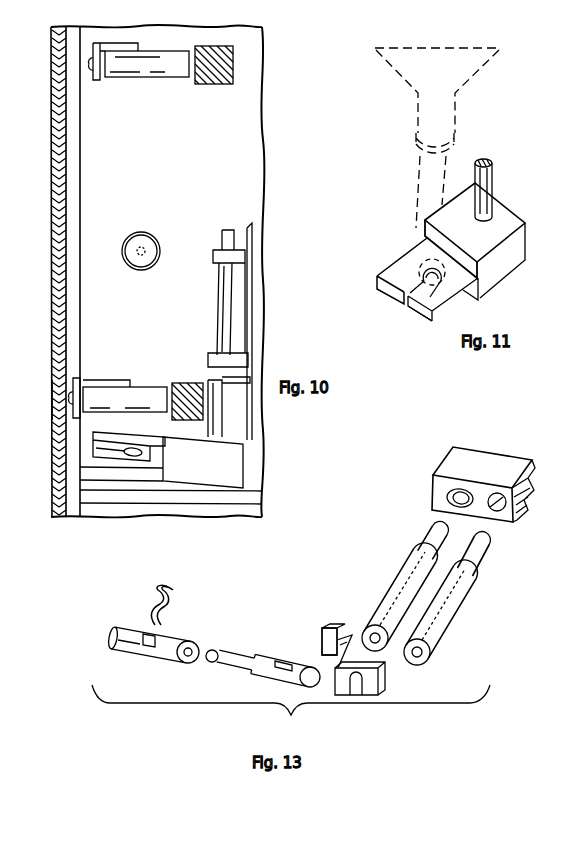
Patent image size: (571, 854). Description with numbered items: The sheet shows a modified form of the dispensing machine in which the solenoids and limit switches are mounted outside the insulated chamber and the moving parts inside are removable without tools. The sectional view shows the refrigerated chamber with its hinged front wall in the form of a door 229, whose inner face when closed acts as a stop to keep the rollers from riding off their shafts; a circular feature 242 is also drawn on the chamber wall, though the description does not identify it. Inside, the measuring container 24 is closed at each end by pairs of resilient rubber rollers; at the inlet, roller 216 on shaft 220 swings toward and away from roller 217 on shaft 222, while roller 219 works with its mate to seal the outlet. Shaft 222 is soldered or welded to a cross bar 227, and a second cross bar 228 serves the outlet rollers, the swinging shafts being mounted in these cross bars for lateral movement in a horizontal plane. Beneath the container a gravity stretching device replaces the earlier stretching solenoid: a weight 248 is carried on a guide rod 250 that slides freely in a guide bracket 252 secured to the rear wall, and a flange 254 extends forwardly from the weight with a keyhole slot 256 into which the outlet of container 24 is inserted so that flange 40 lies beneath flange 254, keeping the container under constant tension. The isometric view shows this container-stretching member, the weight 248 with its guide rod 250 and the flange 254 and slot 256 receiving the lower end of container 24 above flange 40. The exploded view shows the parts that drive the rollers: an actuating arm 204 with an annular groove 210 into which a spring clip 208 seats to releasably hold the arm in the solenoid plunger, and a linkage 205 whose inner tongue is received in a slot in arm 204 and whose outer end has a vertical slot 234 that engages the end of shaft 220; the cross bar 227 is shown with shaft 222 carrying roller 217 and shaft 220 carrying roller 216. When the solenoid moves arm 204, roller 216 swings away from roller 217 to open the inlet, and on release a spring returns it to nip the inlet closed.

In FIG. 11, the measuring container 24 is at (410, 84).
In FIG. 11, the flange 40 is at (417, 300).
In FIG. 13, the actuating arm 204 is at (265, 660).
In FIG. 13, the linkage 205 is at (345, 632).
In FIG. 13, the spring clip 208 is at (173, 601).
In FIG. 13, the annular groove 210 is at (220, 650).
In FIG. 13, the resilient rubber roller 216 is at (388, 575).
In FIG. 10, the resilient rubber roller 217 is at (150, 73).
In FIG. 13, the resilient rubber roller 217 is at (443, 612).
In FIG. 10, the resilient rubber roller 219 is at (138, 391).
In FIG. 13, the shaft 220 is at (426, 537).
In FIG. 13, the shaft 222 is at (482, 555).
In FIG. 10, the cross bar 227 is at (223, 79).
In FIG. 13, the cross bar 227 is at (493, 458).
In FIG. 10, the cross bar 228 is at (185, 384).
In FIG. 10, the door 229 is at (55, 393).
In FIG. 13, the vertical slot 234 is at (358, 692).
In FIG. 10, the opening 242 is at (144, 239).
In FIG. 10, the weight 248 is at (232, 465).
In FIG. 11, the weight 248 is at (510, 216).
In FIG. 10, the guide rod 250 is at (220, 286).
In FIG. 11, the guide rod 250 is at (486, 166).
In FIG. 10, the guide bracket 252 is at (245, 320).
In FIG. 10, the flange 254 is at (152, 442).
In FIG. 11, the flange 254 is at (407, 255).
In FIG. 10, the keyhole slot 256 is at (133, 457).
In FIG. 11, the keyhole slot 256 is at (420, 268).